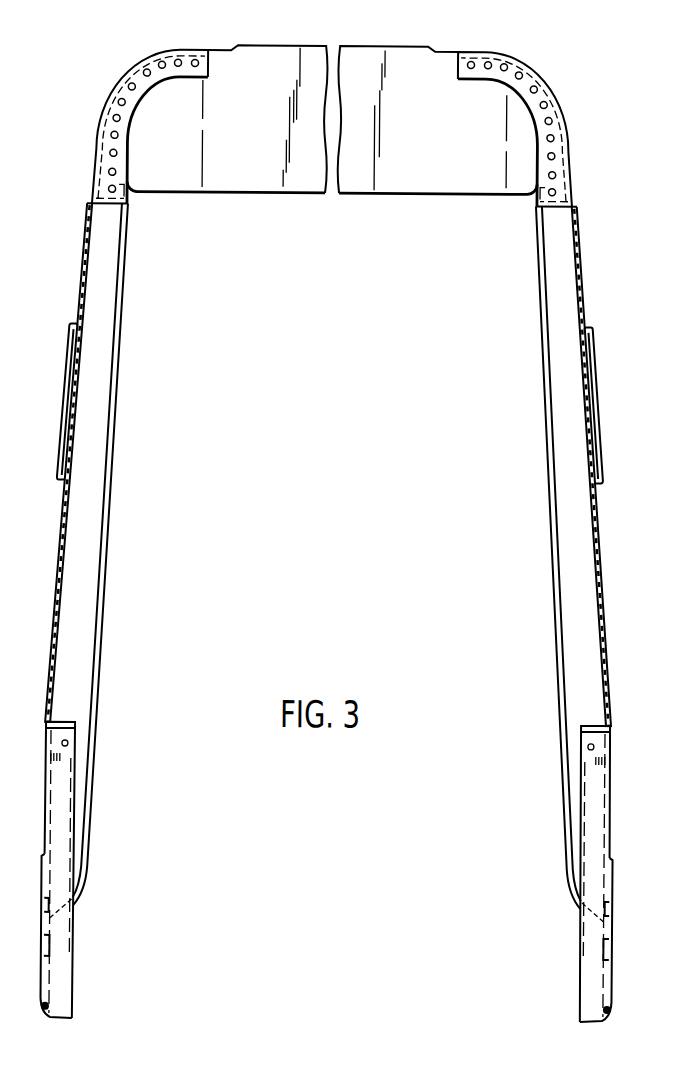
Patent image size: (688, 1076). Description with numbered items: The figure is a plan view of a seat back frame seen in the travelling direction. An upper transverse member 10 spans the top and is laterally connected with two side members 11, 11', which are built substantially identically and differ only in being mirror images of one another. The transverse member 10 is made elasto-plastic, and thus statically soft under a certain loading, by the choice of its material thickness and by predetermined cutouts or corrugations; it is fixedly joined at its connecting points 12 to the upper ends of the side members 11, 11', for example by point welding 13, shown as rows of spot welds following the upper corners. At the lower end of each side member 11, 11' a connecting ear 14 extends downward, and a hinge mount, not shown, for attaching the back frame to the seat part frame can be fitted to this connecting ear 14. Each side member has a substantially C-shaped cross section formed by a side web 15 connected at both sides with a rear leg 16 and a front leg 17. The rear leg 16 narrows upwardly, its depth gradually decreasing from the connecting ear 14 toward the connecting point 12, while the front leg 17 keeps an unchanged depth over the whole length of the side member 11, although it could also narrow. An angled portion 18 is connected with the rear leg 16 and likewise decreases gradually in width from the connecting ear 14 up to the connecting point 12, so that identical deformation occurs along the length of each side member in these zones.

The upper transverse member 10 is at (427, 142).
The side member 11 is at (68, 464).
The side member 11' is at (595, 468).
The connecting point 12 is at (187, 86).
The point welding 13 is at (108, 172).
The connecting ear 14 is at (89, 974).
The side web 15 is at (66, 552).
The rear leg 16 is at (91, 582).
The front leg 17 is at (69, 792).
The angled portion 18 is at (102, 688).